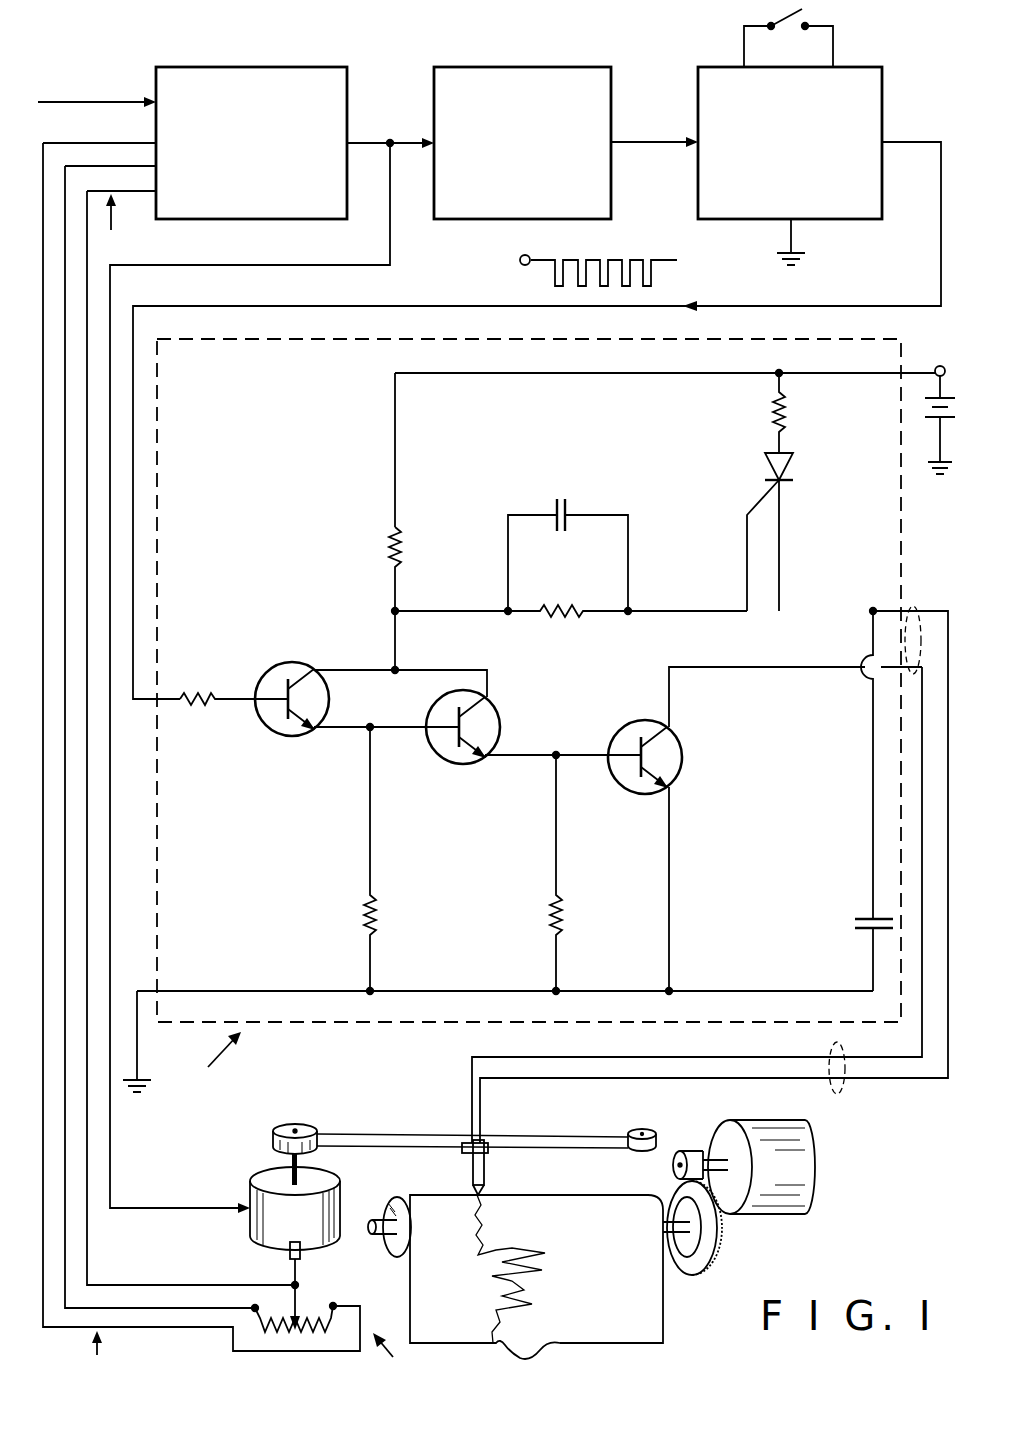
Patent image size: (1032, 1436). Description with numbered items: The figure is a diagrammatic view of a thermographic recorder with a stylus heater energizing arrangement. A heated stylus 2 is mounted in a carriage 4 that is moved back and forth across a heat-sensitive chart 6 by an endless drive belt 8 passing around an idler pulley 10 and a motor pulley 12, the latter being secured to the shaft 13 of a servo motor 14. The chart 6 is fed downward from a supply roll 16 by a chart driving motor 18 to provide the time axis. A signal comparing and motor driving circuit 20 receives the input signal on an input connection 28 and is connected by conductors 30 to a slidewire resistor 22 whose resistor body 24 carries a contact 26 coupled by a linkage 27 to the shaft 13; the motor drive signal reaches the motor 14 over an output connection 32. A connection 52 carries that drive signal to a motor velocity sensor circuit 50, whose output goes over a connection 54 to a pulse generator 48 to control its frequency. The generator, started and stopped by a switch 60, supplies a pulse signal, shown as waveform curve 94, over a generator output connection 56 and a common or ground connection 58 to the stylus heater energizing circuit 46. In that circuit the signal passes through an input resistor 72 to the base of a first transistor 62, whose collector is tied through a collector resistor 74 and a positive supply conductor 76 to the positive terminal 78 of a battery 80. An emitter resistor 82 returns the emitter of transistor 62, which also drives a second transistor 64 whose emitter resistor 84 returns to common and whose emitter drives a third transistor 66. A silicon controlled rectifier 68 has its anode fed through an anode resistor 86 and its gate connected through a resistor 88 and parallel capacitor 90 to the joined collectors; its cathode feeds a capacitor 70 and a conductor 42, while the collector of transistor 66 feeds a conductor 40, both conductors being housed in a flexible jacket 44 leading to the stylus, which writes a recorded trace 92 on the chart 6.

The heated stylus 2 is at (472, 1142).
The carriage 4 is at (488, 1152).
The heat-sensitive chart 6 is at (640, 1338).
The endless drive belt 8 is at (528, 1136).
The idler pulley 10 is at (648, 1130).
The motor pulley 12 is at (297, 1124).
The shaft 13 is at (300, 1167).
The servo motor 14 is at (248, 1190).
The supply roll 16 is at (400, 1250).
The chart driving motor 18 is at (785, 1214).
The signal comparing and motor driving circuit 20 is at (268, 67).
The slidewire resistor 22 is at (339, 1344).
The resistor body 24 is at (334, 1304).
The contact 26 is at (303, 1322).
The linkage 27 is at (298, 1277).
The input connection 28 is at (62, 102).
The conductors 30 is at (201, 763).
The output connection 32 is at (366, 140).
The flexible electrical conductor 40 is at (886, 1057).
The flexible electrical conductor 42 is at (914, 1078).
The flexible jacket 44 is at (920, 612).
The stylus heater energizing circuit 46 is at (529, 720).
The pulse generator 48 is at (852, 67).
The motor velocity sensor circuit 50 is at (545, 67).
The connection 52 is at (418, 148).
The connection 54 is at (640, 142).
The generator output connection 56 is at (906, 142).
The common or ground connection 58 is at (797, 252).
The switch 60 is at (768, 25).
The first transistor 62 is at (312, 666).
The second transistor 64 is at (498, 720).
The third transistor 66 is at (682, 754).
The silicon controlled rectifier 68 is at (770, 470).
The capacitor 70 is at (855, 923).
The input resistor 72 is at (197, 694).
The collector resistor 74 is at (392, 548).
The positive supply conductor 76 is at (393, 440).
The positive terminal 78 is at (945, 368).
The battery 80 is at (954, 406).
The emitter resistor 82 is at (380, 915).
The emitter resistor 84 is at (566, 915).
The anode resistor 86 is at (774, 416).
The resistor 88 is at (558, 608).
The capacitor 90 is at (562, 497).
The recorded trace 92 is at (478, 1250).
The waveform curve 94 is at (592, 262).